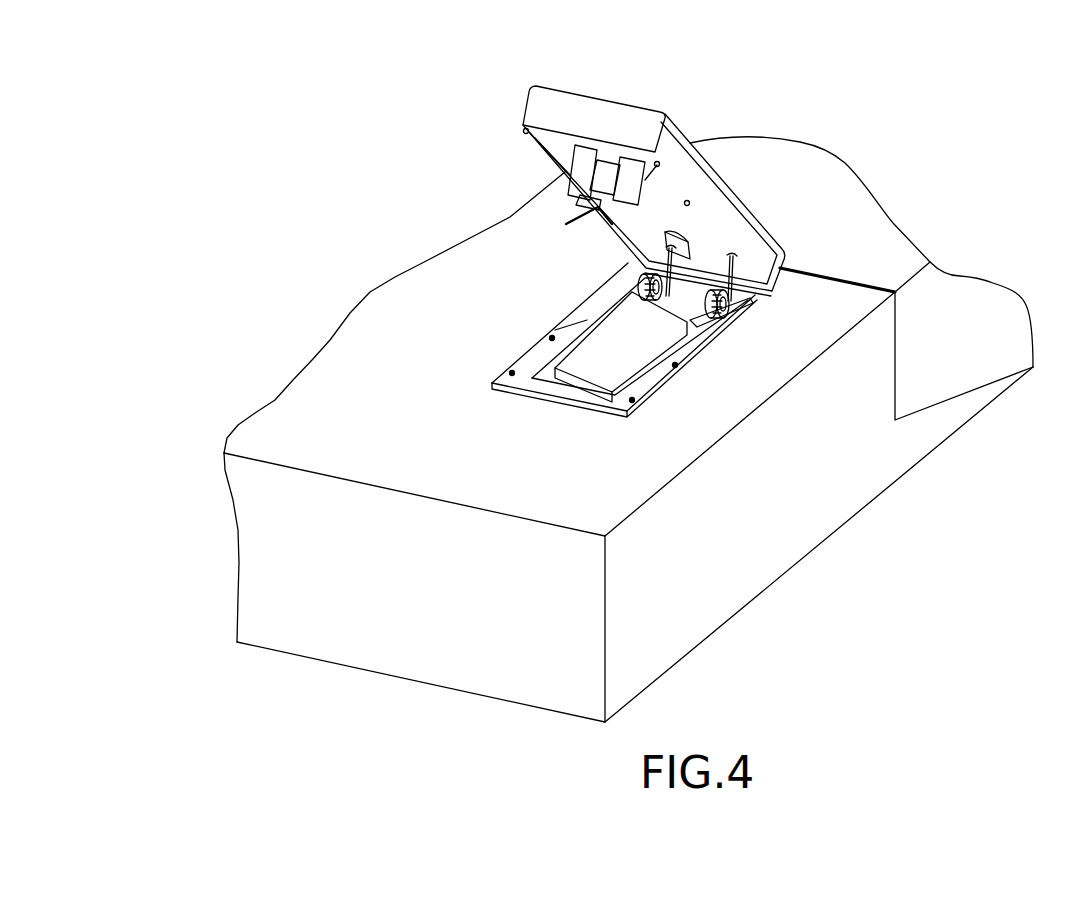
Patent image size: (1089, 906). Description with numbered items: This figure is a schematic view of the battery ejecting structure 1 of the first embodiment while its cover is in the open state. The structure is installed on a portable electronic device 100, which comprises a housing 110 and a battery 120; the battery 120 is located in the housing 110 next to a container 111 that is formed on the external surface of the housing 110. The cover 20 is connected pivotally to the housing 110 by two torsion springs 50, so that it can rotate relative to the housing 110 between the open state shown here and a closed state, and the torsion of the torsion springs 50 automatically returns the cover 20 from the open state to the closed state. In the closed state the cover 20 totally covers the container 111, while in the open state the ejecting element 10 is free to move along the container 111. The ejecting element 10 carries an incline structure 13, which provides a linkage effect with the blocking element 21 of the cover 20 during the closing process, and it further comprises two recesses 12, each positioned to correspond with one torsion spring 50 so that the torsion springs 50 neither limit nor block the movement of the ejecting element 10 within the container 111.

The battery ejecting structure 1 is at (472, 125).
The ejecting element 10 is at (613, 336).
The recess 12 is at (638, 303).
The incline structure 13 is at (617, 372).
The cover 20 is at (680, 150).
The blocking element 21 is at (652, 186).
The torsion spring 50 is at (643, 283).
The portable electronic device 100 is at (633, 409).
The housing 110 is at (364, 317).
The container 111 is at (593, 385).
The battery 120 is at (960, 290).